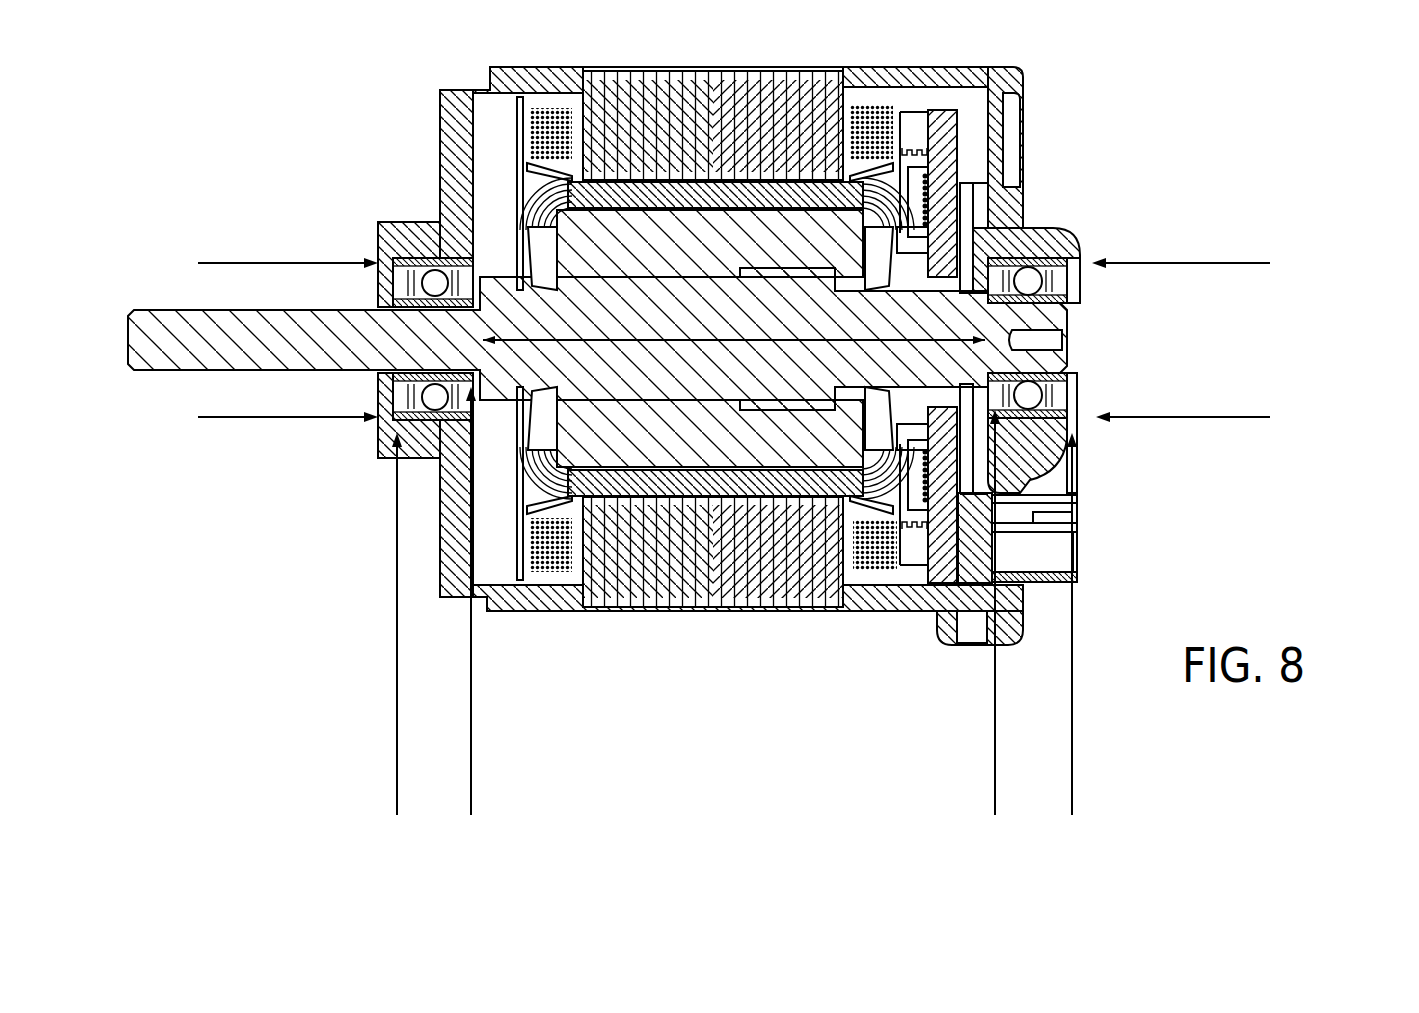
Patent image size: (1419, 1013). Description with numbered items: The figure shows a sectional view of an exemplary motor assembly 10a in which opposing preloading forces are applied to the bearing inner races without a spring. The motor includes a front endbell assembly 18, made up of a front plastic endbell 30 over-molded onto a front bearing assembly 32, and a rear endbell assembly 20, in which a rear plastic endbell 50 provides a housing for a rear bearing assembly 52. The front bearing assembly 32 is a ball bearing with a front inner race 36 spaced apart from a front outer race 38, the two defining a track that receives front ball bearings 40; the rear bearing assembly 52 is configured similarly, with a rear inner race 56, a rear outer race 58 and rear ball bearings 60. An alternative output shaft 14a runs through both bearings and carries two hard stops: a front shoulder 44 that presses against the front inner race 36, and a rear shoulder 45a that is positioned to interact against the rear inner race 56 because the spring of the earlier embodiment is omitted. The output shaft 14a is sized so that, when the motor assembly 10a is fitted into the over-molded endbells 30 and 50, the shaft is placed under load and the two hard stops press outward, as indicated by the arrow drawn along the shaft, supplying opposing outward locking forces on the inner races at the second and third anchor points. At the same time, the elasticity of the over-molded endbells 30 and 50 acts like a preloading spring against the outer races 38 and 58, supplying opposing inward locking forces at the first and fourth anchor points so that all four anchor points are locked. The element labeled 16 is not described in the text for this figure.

The motor assembly 10a is at (163, 95).
The output shaft 14a is at (658, 368).
The shaft 16 is at (152, 338).
The front endbell assembly 18 is at (303, 95).
The rear endbell assembly 20 is at (1219, 178).
The front plastic endbell 30 is at (458, 90).
The front bearing assembly 32 is at (340, 237).
The front inner race 36 is at (369, 452).
The front outer race 38 is at (392, 430).
The front ball bearings 40 is at (436, 400).
The front shoulder 44 is at (421, 287).
The rear shoulder 45a is at (1052, 392).
The rear plastic endbell 50 is at (1005, 70).
The rear bearing assembly 52 is at (1140, 237).
The rear inner race 56 is at (1067, 297).
The rear outer race 58 is at (1063, 230).
The rear ball bearings 60 is at (1030, 280).